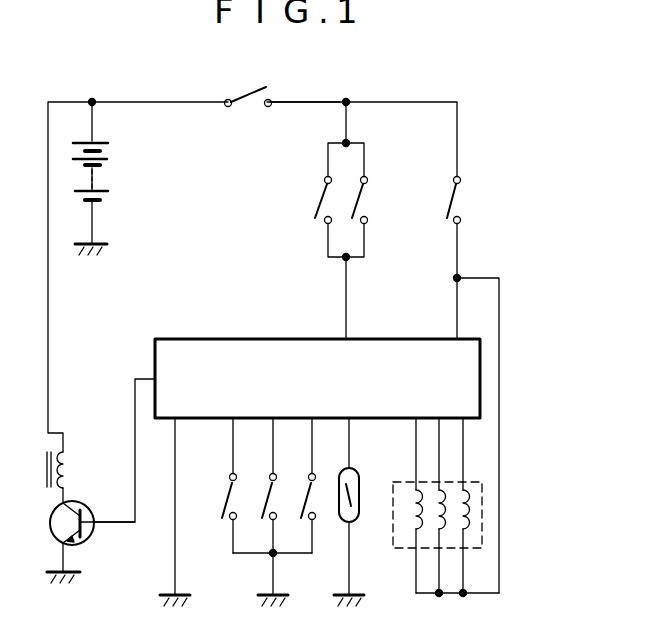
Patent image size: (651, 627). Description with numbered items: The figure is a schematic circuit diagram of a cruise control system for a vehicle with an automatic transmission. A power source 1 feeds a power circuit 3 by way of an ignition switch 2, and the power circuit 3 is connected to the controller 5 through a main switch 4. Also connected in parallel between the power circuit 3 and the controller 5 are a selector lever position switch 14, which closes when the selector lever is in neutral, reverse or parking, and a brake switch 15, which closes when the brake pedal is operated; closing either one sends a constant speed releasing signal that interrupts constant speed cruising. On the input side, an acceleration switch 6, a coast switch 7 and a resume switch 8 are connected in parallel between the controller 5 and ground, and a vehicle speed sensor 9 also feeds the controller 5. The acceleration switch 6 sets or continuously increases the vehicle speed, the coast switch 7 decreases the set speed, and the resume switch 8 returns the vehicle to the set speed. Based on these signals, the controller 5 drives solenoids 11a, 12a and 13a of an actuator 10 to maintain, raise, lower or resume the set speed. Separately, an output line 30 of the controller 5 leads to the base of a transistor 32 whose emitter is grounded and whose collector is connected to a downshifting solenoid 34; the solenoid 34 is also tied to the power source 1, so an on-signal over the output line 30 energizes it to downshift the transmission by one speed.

The power source 1 is at (108, 162).
The ignition switch 2 is at (241, 88).
The power circuit 3 is at (314, 100).
The main switch 4 is at (460, 201).
The controller 5 is at (285, 338).
The acceleration switch 6 is at (226, 494).
The coast switch 7 is at (269, 495).
The resume switch 8 is at (306, 500).
The vehicle speed sensor 9 is at (360, 488).
The actuator 10 is at (457, 505).
The solenoid 11a is at (412, 526).
The solenoid 12a is at (440, 497).
The solenoid 13a is at (467, 504).
The selector lever position switch 14 is at (312, 206).
The brake switch 15 is at (361, 203).
The output line 30 is at (126, 525).
The transistor 32 is at (85, 543).
The downshifting solenoid 34 is at (68, 471).